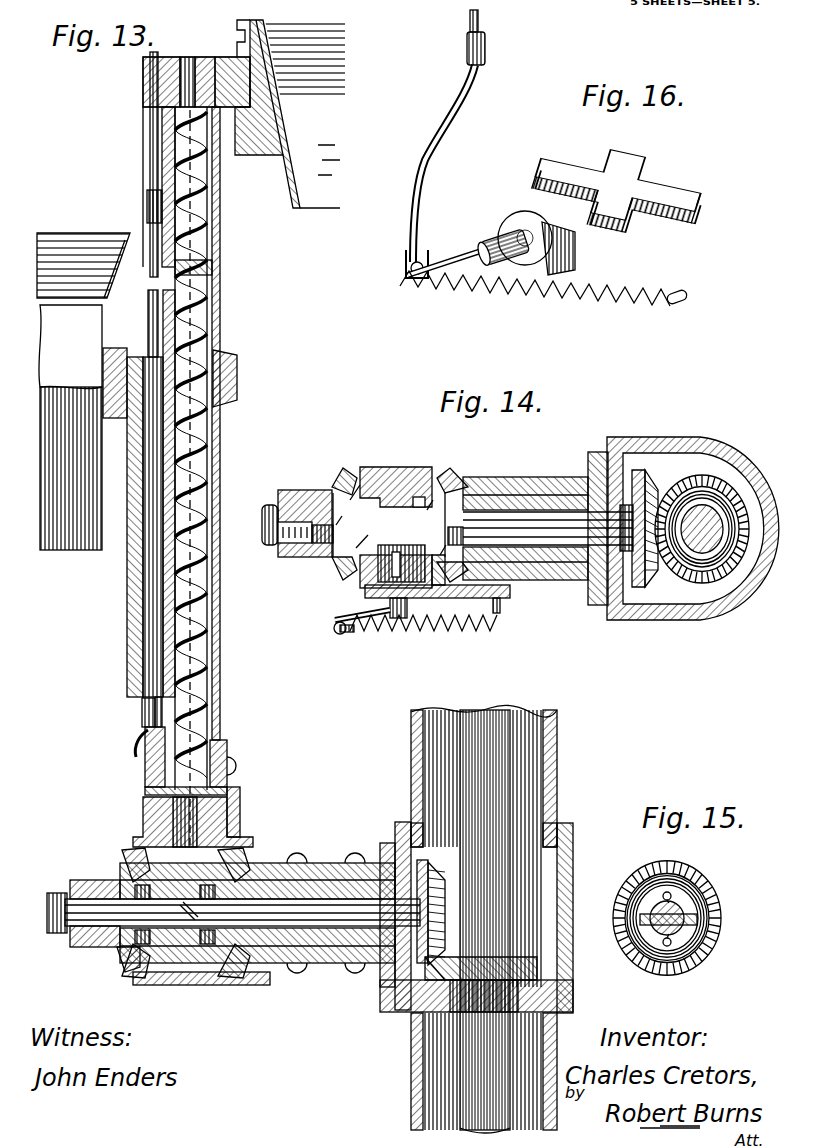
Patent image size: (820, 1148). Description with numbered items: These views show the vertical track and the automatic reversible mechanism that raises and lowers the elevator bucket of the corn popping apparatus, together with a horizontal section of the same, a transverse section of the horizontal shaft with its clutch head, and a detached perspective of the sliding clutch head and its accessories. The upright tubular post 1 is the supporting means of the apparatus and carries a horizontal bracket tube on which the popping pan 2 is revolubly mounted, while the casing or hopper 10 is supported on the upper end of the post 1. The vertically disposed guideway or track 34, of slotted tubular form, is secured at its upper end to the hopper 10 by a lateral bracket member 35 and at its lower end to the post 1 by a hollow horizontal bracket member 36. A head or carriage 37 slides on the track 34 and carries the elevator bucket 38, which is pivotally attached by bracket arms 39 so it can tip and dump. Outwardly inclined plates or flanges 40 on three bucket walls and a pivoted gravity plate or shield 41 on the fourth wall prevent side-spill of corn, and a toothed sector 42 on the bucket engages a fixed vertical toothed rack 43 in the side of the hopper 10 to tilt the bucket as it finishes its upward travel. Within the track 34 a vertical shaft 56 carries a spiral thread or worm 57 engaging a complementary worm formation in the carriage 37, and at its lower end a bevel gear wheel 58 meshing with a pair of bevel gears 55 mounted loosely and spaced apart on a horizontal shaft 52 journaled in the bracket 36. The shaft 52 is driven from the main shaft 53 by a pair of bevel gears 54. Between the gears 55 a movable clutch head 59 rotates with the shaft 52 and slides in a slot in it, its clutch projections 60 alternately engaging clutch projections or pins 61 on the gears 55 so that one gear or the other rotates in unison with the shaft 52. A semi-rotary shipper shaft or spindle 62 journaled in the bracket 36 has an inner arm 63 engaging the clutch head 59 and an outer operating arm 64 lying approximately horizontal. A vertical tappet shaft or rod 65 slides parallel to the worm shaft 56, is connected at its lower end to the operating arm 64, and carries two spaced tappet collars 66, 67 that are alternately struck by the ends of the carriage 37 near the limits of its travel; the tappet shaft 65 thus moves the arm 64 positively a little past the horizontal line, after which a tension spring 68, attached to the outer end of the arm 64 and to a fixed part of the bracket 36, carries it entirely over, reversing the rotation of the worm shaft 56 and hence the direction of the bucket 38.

In FIG. 13, the upright tubular post 1 is at (557, 787).
In FIG. 14, the upright tubular post 1 is at (742, 452).
In FIG. 13, the popping pan 2 is at (410, 815).
In FIG. 13, the casing or hopper 10 is at (290, 114).
In FIG. 13, the vertically disposed guideway or track 34 is at (220, 180).
In FIG. 13, the lateral bracket member 35 is at (232, 58).
In FIG. 13, the hollow horizontal bracket member 36 is at (275, 975).
In FIG. 14, the hollow horizontal bracket member 36 is at (484, 525).
In FIG. 13, the head or carriage 37 is at (153, 585).
In FIG. 13, the elevator bucket 38 is at (71, 468).
In FIG. 13, the bracket arms 39 is at (120, 352).
In FIG. 13, the outwardly inclined plates or flanges 40 is at (80, 240).
In FIG. 13, the gravity plate or shield 41 is at (70, 347).
In FIG. 13, the toothed sector 42 is at (237, 377).
In FIG. 13, the fixed vertical toothed rack 43 is at (237, 28).
In FIG. 13, the horizontal shaft 52 is at (75, 932).
In FIG. 14, the horizontal shaft 52 is at (447, 523).
In FIG. 15, the horizontal shaft 52 is at (682, 905).
In FIG. 13, the main shaft 53 is at (510, 872).
In FIG. 14, the main shaft 53 is at (700, 505).
In FIG. 13, the bevel gears 54 is at (447, 895).
In FIG. 14, the bevel gears 54 is at (650, 470).
In FIG. 13, the bevel gears 55 is at (128, 978).
In FIG. 14, the bevel gears 55 is at (340, 477).
In FIG. 15, the bevel gears 55 is at (703, 917).
In FIG. 13, the vertical shaft 56 is at (190, 160).
In FIG. 13, the spiral thread or worm 57 is at (167, 117).
In FIG. 13, the bevel gear wheel 58 is at (240, 825).
In FIG. 13, the movable clutch head 59 is at (278, 853).
In FIG. 14, the movable clutch head 59 is at (389, 525).
In FIG. 15, the movable clutch head 59 is at (658, 935).
In FIG. 16, the movable clutch head 59 is at (616, 191).
In FIG. 13, the clutch projections 60 is at (140, 898).
In FIG. 14, the clutch projections 60 is at (370, 497).
In FIG. 15, the clutch projections 60 is at (640, 923).
In FIG. 16, the clutch projections 60 is at (630, 165).
In FIG. 13, the clutch projections or pins 61 is at (125, 948).
In FIG. 14, the clutch projections or pins 61 is at (391, 520).
In FIG. 15, the clutch projections or pins 61 is at (668, 893).
In FIG. 14, the semi-rotary shipper shaft or spindle 62 is at (389, 605).
In FIG. 16, the semi-rotary shipper shaft or spindle 62 is at (495, 240).
In FIG. 13, the arm 63 is at (150, 975).
In FIG. 14, the arm 63 is at (425, 598).
In FIG. 16, the arm 63 is at (575, 252).
In FIG. 14, the operating arm 64 is at (340, 618).
In FIG. 16, the operating arm 64 is at (447, 257).
In FIG. 13, the vertical tappet shaft or rod 65 is at (150, 134).
In FIG. 14, the vertical tappet shaft or rod 65 is at (334, 632).
In FIG. 16, the vertical tappet shaft or rod 65 is at (479, 22).
In FIG. 13, the tappet collar 66 is at (147, 195).
In FIG. 13, the tappet collar 67 is at (142, 710).
In FIG. 16, the tappet collar 67 is at (485, 56).
In FIG. 14, the tension spring 68 is at (402, 630).
In FIG. 16, the tension spring 68 is at (545, 297).